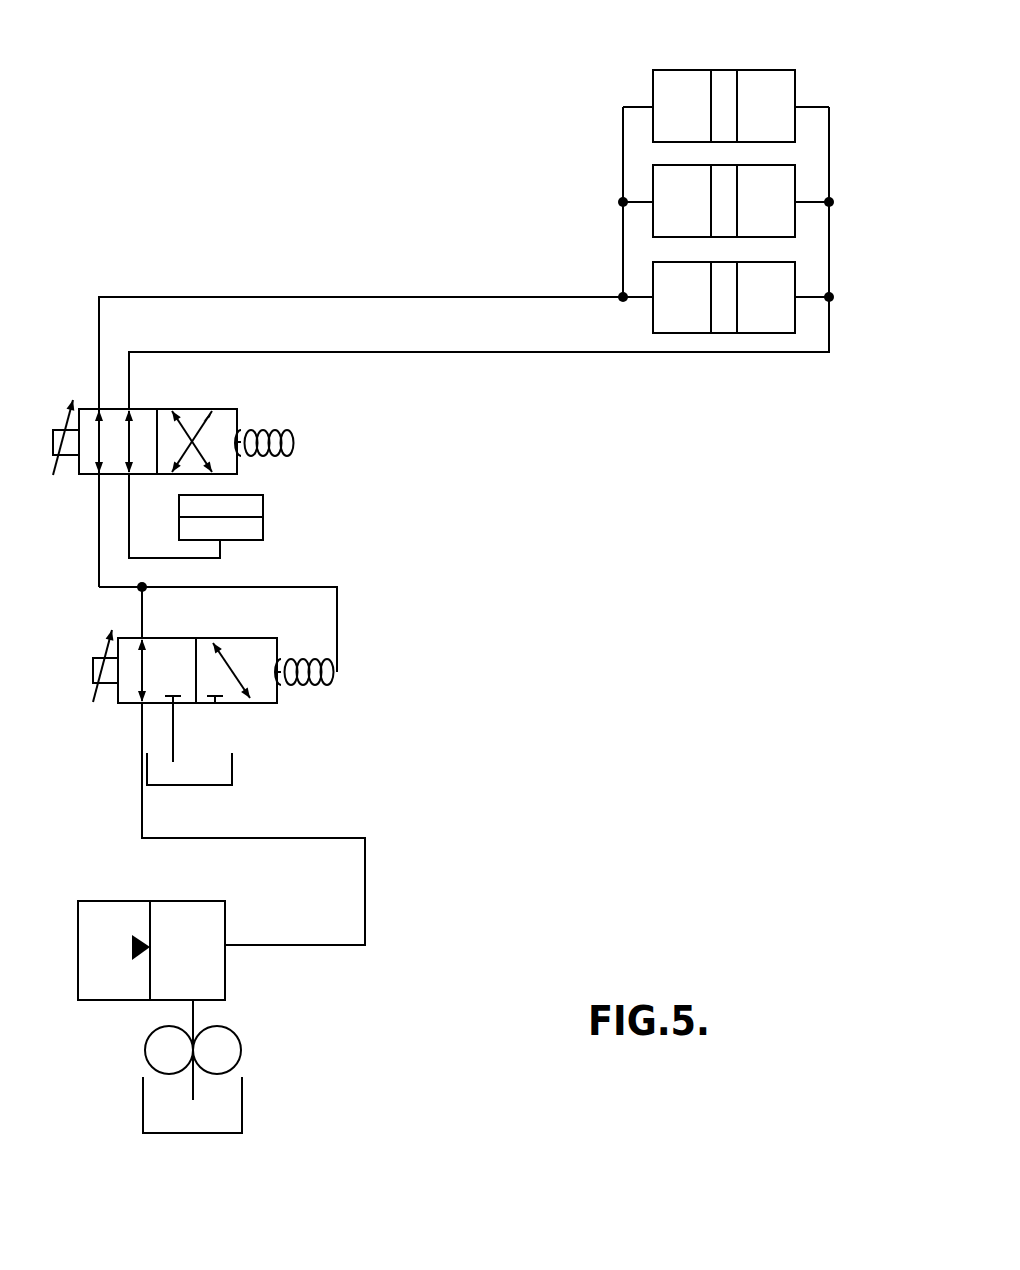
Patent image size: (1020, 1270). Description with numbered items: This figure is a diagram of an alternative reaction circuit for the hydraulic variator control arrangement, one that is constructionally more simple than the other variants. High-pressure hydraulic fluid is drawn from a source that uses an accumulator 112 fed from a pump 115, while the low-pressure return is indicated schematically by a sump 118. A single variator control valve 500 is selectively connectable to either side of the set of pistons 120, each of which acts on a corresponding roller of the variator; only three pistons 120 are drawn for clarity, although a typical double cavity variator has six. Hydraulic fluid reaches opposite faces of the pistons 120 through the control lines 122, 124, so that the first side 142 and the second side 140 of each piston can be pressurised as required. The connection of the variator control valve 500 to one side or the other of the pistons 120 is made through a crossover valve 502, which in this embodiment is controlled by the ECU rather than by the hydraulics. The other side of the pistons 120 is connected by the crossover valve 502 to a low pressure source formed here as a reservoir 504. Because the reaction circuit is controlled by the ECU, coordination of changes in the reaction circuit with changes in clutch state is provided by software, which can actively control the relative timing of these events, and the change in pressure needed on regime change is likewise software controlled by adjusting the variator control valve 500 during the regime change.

The accumulator 112 is at (117, 901).
The pump 115 is at (242, 1062).
The sump 118 is at (232, 764).
The pistons 120 is at (711, 169).
The control line 122 is at (386, 297).
The control line 124 is at (510, 353).
The second side of piston 140 is at (674, 100).
The first side of piston 142 is at (760, 105).
The variator control valve 500 is at (326, 703).
The crossover valve 502 is at (250, 413).
The reservoir 504 is at (238, 540).